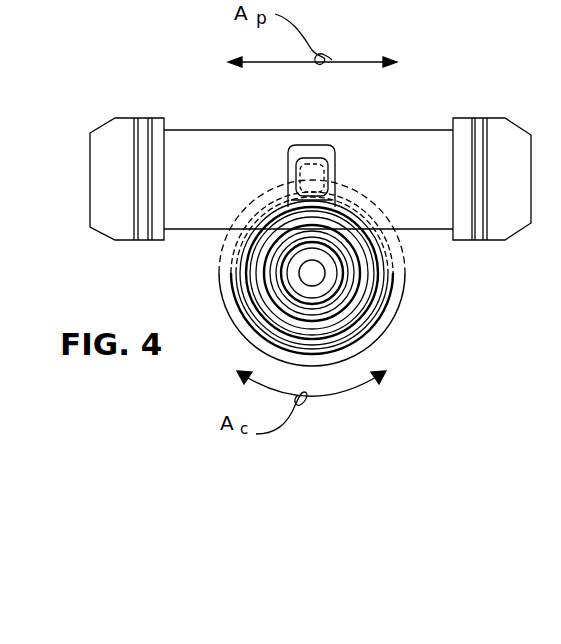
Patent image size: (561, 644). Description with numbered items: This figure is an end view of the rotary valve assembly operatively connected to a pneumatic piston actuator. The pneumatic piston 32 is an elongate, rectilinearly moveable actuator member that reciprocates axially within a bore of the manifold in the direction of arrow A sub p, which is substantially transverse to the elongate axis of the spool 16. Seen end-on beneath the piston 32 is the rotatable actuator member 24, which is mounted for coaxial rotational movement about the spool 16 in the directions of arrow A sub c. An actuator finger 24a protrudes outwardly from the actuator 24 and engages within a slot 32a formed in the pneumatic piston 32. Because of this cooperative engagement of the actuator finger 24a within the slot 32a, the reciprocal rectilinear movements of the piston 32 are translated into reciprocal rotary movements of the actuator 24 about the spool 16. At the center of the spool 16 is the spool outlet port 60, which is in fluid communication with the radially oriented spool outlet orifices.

The pneumatic piston 32 is at (216, 192).
The slot 32a is at (303, 146).
The actuator finger 24a is at (313, 180).
The rotatable actuator member 24 is at (221, 267).
The spool outlet port 60 is at (334, 270).
The spool 16 is at (313, 273).